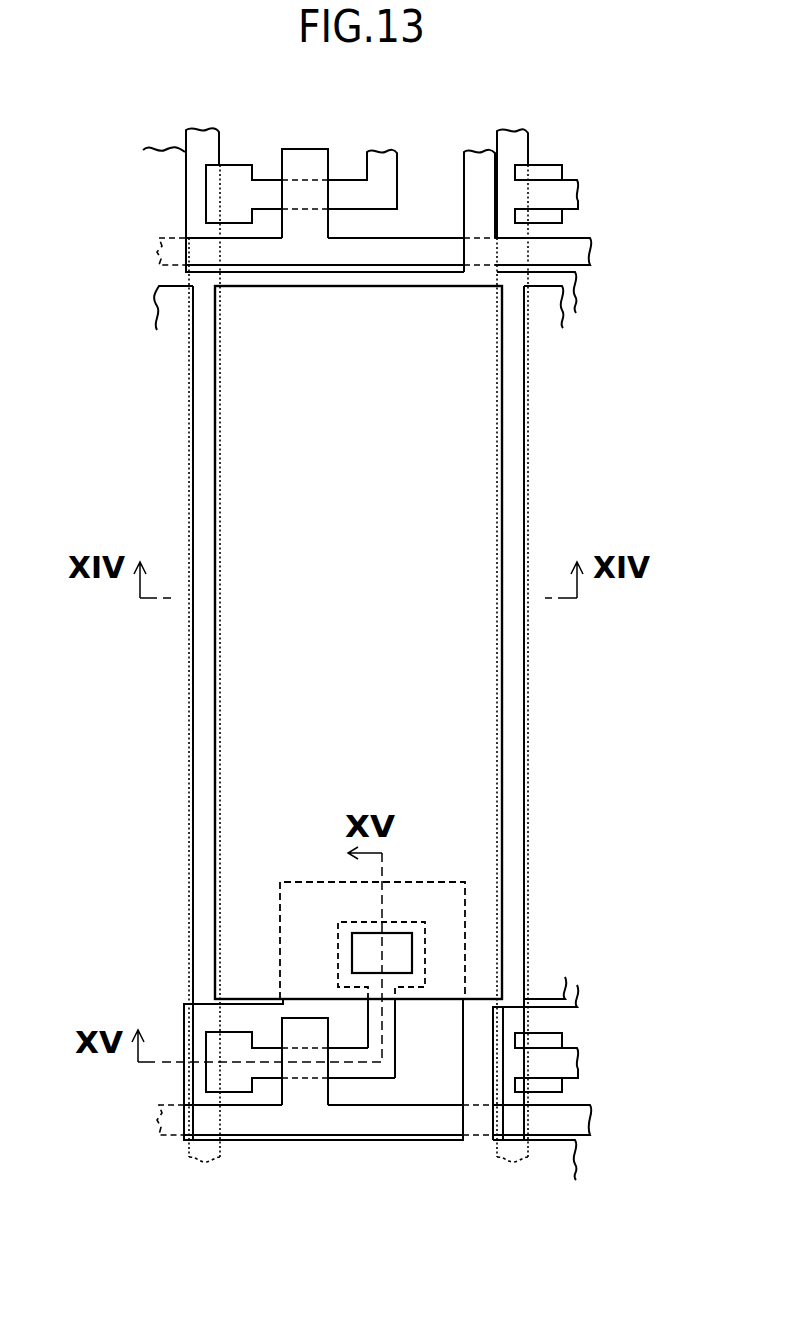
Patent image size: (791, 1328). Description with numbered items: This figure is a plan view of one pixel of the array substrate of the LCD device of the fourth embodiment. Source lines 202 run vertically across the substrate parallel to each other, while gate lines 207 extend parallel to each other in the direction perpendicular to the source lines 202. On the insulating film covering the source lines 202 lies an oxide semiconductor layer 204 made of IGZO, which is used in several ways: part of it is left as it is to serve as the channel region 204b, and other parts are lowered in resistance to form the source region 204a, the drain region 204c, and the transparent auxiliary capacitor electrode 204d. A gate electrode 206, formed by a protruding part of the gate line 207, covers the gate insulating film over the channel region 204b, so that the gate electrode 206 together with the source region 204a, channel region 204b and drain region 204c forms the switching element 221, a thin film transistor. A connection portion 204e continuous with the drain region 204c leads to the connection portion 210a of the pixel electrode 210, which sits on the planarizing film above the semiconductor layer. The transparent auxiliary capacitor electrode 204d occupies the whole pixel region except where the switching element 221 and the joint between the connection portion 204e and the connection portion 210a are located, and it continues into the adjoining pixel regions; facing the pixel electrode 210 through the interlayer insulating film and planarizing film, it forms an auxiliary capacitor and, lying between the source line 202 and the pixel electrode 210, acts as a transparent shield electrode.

The source line 202 is at (200, 1098).
The oxide semiconductor layer 204 is at (196, 1082).
The source region 204a is at (237, 1080).
The channel region 204b is at (305, 1068).
The drain region 204c is at (393, 1033).
The transparent auxiliary capacitor electrode 204d is at (482, 1027).
The connection portion 204e is at (420, 968).
The gate electrode 206 is at (328, 1088).
The gate line 207 is at (397, 1125).
The pixel electrode 210 is at (390, 517).
The connection portion of the pixel electrode 210a is at (410, 952).
The switching element 221 is at (292, 1021).